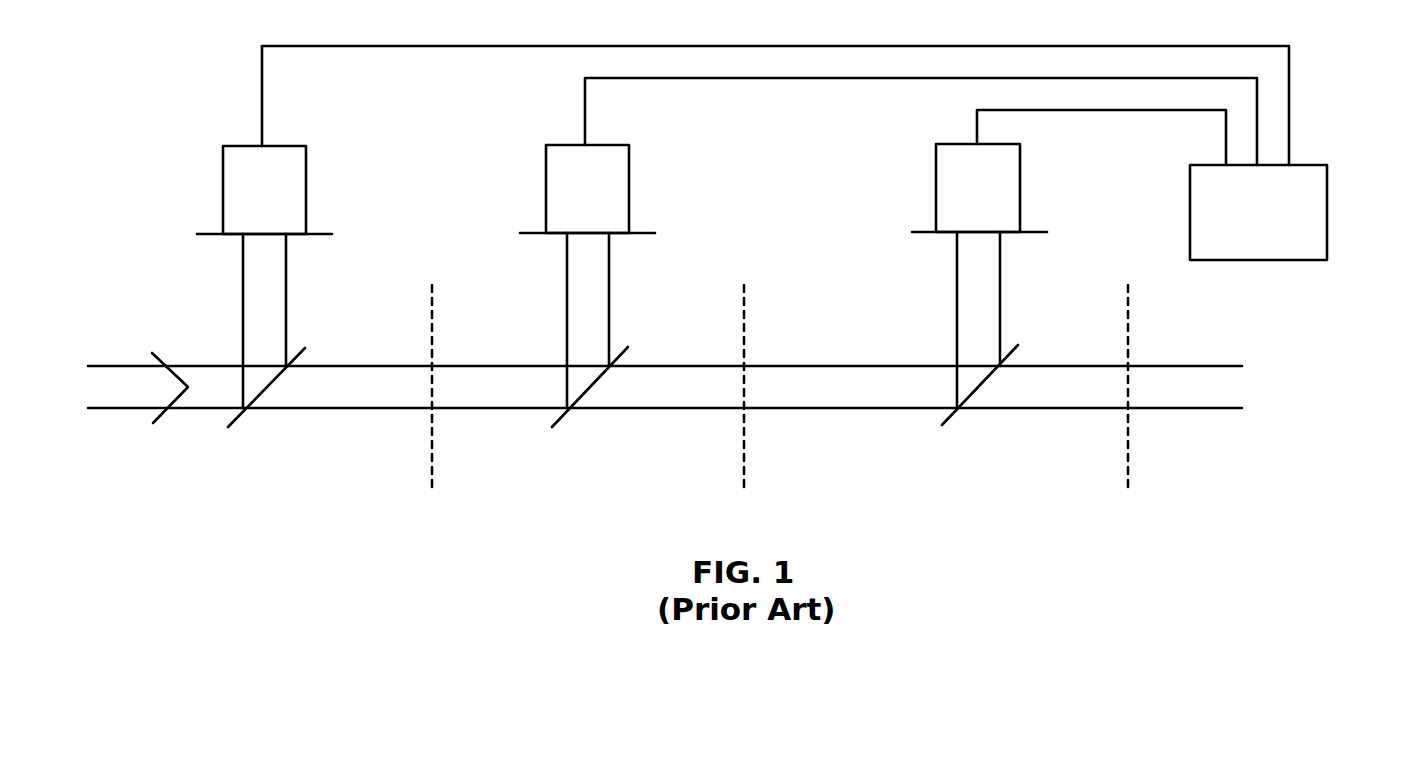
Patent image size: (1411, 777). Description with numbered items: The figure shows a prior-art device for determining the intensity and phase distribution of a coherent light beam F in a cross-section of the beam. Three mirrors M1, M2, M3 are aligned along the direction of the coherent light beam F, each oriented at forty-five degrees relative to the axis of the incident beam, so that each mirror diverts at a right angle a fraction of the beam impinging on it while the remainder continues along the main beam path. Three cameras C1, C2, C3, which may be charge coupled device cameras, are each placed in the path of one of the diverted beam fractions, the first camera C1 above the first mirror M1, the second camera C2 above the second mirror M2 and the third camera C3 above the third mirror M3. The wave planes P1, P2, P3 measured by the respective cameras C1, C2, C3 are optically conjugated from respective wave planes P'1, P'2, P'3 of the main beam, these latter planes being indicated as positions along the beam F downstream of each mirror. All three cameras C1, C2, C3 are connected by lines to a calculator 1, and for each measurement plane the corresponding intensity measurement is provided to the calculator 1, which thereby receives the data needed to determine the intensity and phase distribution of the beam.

The calculator 1 is at (1327, 213).
The first camera C1 is at (223, 190).
The second camera C2 is at (546, 190).
The third camera C3 is at (936, 189).
The first wave plane P1 is at (309, 234).
The second wave plane P2 is at (632, 233).
The third wave plane P3 is at (1023, 232).
The first mirror M1 is at (237, 418).
The second mirror M2 is at (563, 413).
The third mirror M3 is at (955, 418).
The first wave plane of the main beam P'1 is at (474, 389).
The second wave plane of the main beam P'2 is at (786, 389).
The third wave plane of the main beam P'3 is at (1171, 389).
The coherent light beam F is at (212, 398).